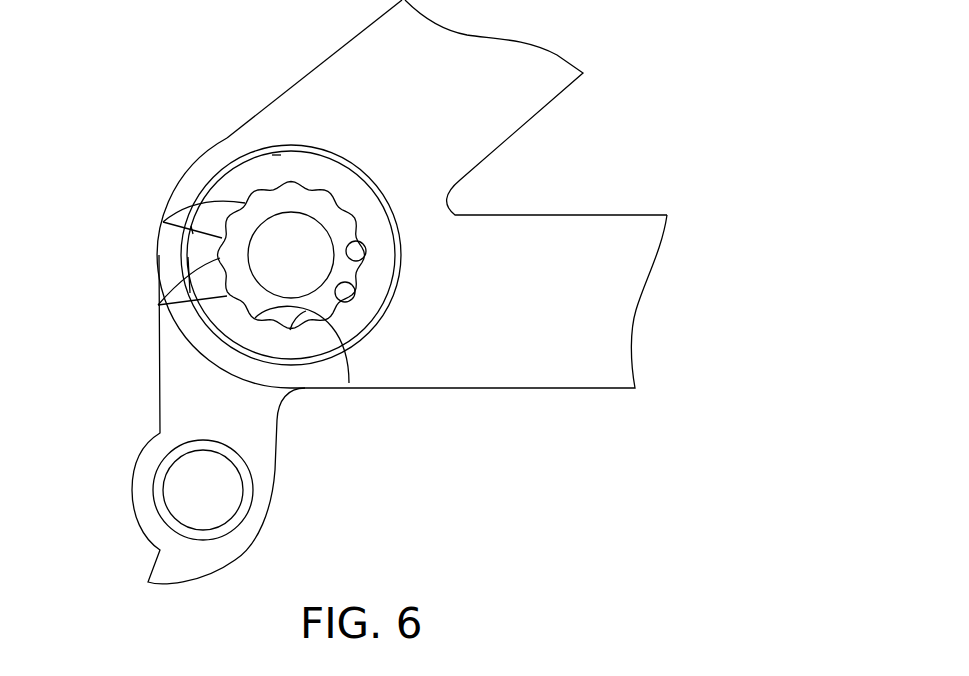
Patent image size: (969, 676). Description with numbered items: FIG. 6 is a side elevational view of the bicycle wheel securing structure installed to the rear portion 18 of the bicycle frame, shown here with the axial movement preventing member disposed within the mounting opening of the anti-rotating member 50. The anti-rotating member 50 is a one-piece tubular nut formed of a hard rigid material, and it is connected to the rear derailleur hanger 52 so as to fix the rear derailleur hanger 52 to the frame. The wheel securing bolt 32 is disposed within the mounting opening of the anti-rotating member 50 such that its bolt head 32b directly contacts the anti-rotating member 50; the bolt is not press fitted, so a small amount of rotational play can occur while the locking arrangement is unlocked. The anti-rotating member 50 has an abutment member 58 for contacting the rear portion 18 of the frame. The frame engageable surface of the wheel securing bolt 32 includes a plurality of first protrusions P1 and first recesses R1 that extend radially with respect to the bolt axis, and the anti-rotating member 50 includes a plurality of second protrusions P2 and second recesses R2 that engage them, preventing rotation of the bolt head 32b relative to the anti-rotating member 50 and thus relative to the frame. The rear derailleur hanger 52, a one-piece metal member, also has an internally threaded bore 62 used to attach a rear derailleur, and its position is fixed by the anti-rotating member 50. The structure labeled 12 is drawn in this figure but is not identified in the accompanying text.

The bicycle frame 12 is at (393, 334).
The rear portion 18 is at (555, 388).
The wheel securing bolt 32 is at (345, 200).
The bolt head 32b is at (295, 200).
The anti-rotating member 50 is at (198, 192).
The rear derailleur hanger 52 is at (155, 392).
The abutment member 58 is at (243, 156).
The internally threaded bore 62 is at (232, 514).
The first recess R1 is at (163, 222).
The second recess R2 is at (349, 383).
The first protrusion P1 is at (158, 305).
The second protrusion P2 is at (356, 265).